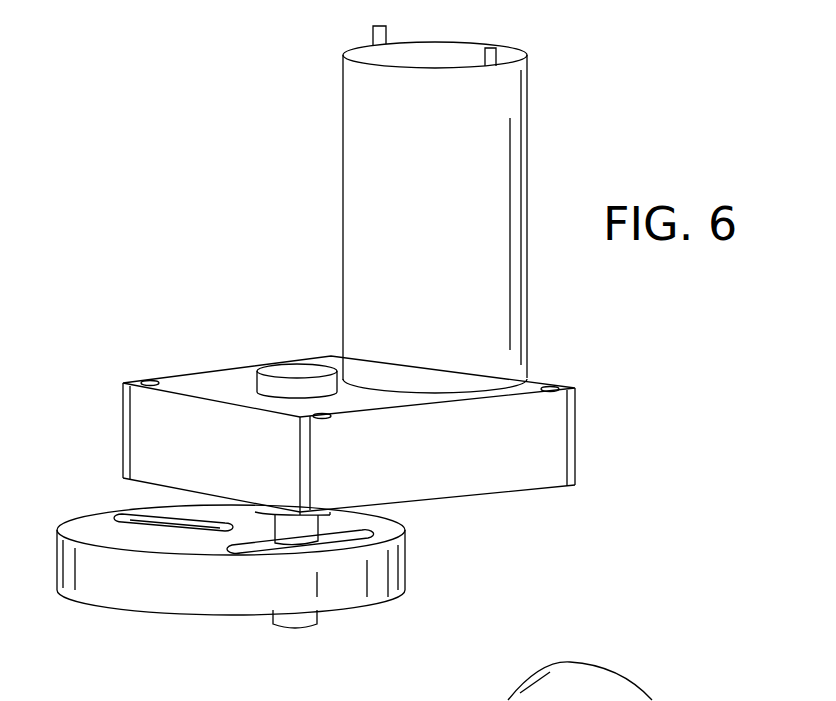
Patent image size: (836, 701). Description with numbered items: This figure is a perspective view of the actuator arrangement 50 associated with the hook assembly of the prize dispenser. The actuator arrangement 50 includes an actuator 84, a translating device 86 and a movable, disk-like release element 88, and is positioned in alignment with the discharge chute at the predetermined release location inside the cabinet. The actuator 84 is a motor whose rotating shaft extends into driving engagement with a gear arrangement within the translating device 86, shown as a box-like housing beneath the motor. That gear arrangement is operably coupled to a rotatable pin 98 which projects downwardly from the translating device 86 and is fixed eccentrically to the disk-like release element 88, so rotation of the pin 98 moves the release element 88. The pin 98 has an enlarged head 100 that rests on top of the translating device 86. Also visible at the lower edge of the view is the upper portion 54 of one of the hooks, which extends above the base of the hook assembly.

The actuator arrangement 50 is at (603, 366).
The actuator 84 is at (380, 213).
The translating device 86 is at (545, 441).
The disk-like release element 88 is at (167, 588).
The rotatable pin 98 is at (303, 528).
The enlarged head 100 is at (302, 370).
The upper portion 54 is at (580, 700).